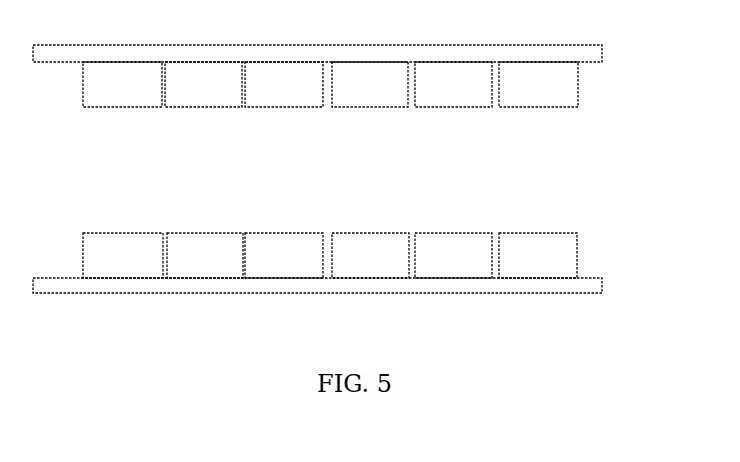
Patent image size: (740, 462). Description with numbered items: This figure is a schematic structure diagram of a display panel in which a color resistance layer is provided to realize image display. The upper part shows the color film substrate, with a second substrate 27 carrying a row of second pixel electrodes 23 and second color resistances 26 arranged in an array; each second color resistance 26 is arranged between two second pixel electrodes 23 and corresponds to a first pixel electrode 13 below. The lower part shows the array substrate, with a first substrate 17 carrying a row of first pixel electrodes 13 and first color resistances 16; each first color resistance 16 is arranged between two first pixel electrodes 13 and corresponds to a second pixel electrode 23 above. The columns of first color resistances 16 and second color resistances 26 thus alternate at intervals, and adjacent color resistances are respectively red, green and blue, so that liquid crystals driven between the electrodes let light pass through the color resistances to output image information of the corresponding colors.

The second substrate 27 is at (532, 45).
The second pixel electrodes 23 is at (130, 97).
The second color resistances 26 is at (375, 107).
The first color resistances 16 is at (453, 233).
The first pixel electrodes 13 is at (577, 252).
The first substrate 17 is at (537, 293).